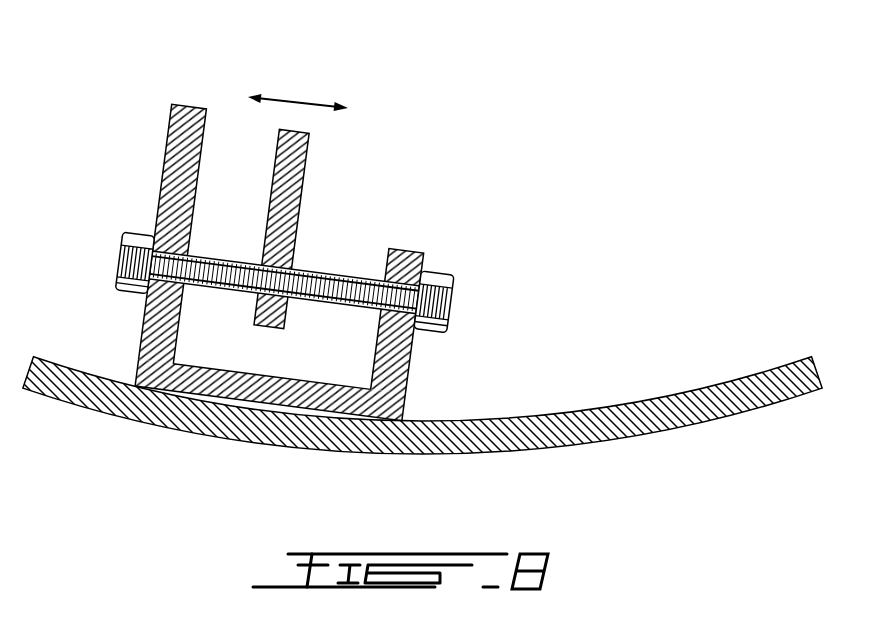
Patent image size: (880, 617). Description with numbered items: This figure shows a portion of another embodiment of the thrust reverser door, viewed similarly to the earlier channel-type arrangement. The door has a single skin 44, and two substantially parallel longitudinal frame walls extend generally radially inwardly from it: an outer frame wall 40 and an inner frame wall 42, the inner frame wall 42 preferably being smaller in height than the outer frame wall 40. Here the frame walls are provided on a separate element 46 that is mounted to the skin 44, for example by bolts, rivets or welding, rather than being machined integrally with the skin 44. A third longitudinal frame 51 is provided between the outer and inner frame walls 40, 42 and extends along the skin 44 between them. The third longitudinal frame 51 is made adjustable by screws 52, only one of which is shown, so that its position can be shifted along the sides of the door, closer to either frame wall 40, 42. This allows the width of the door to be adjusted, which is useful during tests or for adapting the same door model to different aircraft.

The outer frame wall 40 is at (188, 119).
The inner frame wall 42 is at (408, 250).
The skin 44 is at (663, 393).
The separate element 46 is at (315, 402).
The third longitudinal frame 51 is at (309, 151).
The screw 52 is at (220, 289).